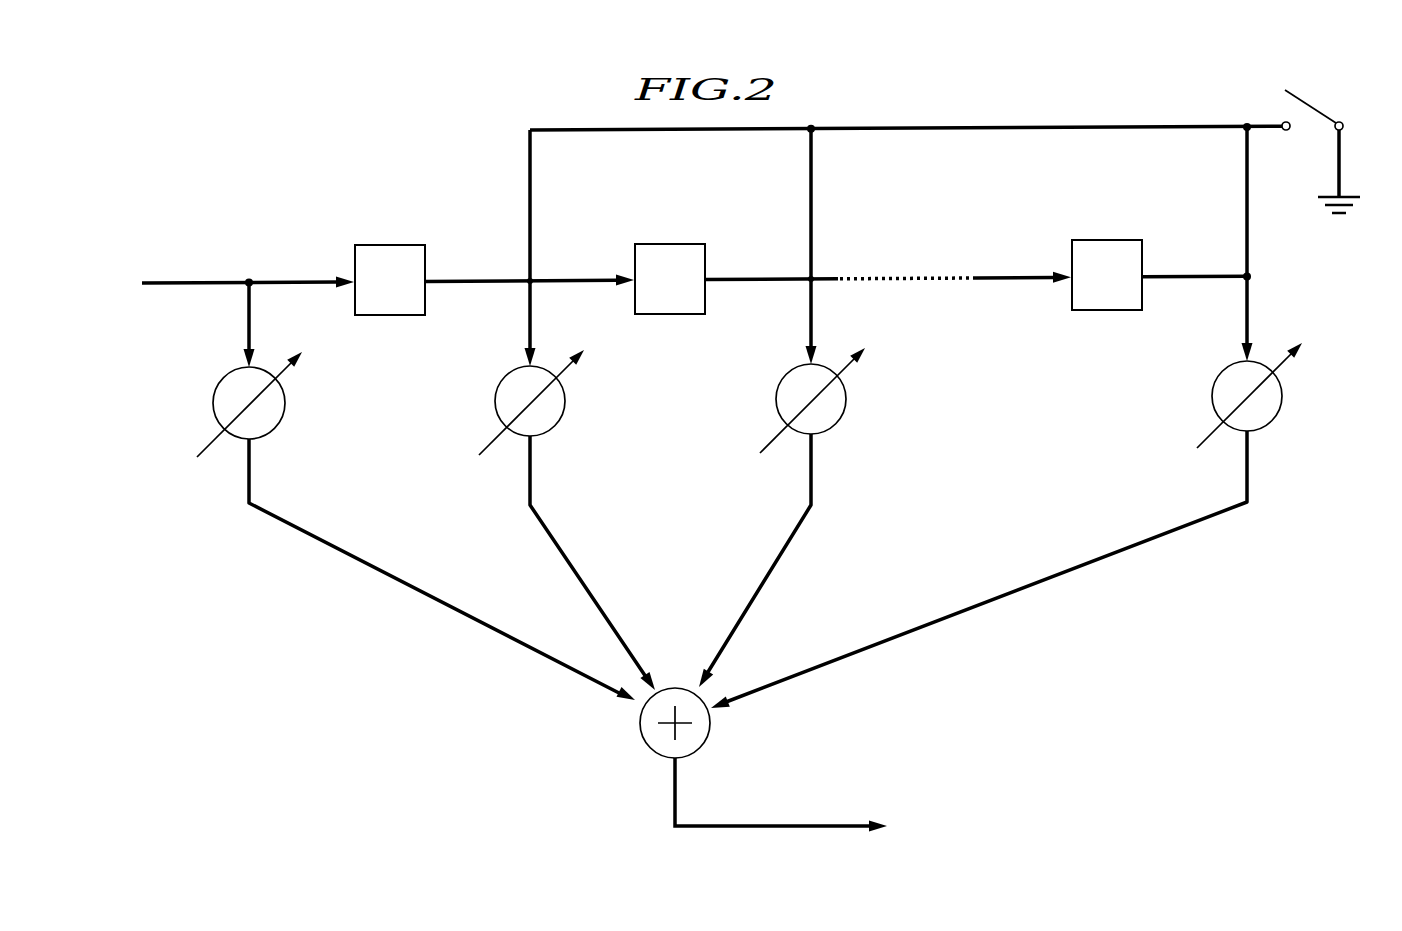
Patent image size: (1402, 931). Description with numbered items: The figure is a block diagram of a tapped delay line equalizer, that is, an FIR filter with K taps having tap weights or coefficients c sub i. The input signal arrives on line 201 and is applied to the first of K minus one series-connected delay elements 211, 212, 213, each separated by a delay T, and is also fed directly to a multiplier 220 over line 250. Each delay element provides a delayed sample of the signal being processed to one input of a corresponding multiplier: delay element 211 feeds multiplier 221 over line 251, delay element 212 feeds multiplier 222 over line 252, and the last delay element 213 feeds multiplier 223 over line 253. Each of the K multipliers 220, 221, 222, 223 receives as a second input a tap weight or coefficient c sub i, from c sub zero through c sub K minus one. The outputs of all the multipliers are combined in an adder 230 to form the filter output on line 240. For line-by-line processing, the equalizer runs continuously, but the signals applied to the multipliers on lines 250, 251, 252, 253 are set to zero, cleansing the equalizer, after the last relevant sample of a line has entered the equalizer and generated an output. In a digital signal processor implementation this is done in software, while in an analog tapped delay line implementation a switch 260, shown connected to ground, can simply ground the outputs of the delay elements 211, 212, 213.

The input line 201 is at (188, 280).
The delay element 211 is at (392, 246).
The delay element 212 is at (678, 243).
The delay element 213 is at (1107, 240).
The multiplier 220 is at (217, 393).
The multiplier 221 is at (497, 393).
The multiplier 222 is at (780, 390).
The multiplier 223 is at (1215, 387).
The adder 230 is at (648, 740).
The output line 240 is at (793, 828).
The multiplier input line 250 is at (250, 308).
The multiplier input line 251 is at (532, 307).
The multiplier input line 252 is at (813, 296).
The multiplier input line 253 is at (1249, 296).
The switch 260 is at (1313, 108).